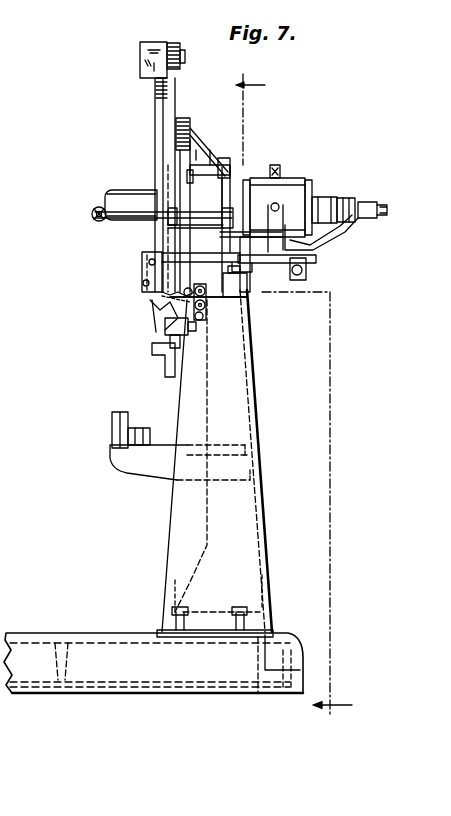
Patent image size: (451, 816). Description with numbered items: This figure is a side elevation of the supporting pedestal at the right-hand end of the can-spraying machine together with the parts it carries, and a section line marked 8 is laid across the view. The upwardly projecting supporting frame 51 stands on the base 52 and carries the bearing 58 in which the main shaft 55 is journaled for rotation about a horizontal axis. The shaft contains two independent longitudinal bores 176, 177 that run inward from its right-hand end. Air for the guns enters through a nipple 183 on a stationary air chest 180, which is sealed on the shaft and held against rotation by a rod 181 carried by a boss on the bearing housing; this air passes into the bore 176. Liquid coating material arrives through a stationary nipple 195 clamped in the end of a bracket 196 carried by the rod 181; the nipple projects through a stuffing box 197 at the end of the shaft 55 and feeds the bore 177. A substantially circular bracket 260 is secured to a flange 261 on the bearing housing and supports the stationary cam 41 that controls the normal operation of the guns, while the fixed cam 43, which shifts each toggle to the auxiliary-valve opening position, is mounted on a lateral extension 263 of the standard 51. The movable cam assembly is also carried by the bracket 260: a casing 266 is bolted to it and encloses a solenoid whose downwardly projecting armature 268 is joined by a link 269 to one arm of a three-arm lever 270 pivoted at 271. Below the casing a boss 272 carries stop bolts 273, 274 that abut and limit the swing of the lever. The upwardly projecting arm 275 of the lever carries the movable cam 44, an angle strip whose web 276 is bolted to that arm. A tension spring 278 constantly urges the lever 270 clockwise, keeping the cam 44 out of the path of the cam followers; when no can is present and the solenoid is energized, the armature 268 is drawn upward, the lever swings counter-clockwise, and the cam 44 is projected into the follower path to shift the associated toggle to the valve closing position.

The section line 8- 8 is at (293, 401).
The stationary cam 41 is at (147, 52).
The fixed cam 43 is at (125, 428).
The movable cam 44 is at (140, 272).
The supporting frame 51 is at (243, 410).
The base 52 is at (85, 641).
The main shaft 55 is at (122, 198).
The bearing 58 is at (222, 174).
The longitudinal bore 176 is at (98, 207).
The longitudinal bore 177 is at (98, 218).
The stationary air chest 180 is at (292, 186).
The rod 181 is at (251, 262).
The nipple 183 is at (277, 166).
The stationary nipple 195 is at (385, 206).
The bracket 196 is at (357, 242).
The stuffing box 197 is at (332, 203).
The circular bracket 260 is at (172, 108).
The flange 261 is at (183, 124).
The lateral extension 263 is at (163, 448).
The casing 266 is at (192, 248).
The armature 268 is at (212, 292).
The link 269 is at (219, 304).
The three-arm lever 270 is at (200, 298).
The pivot 271 is at (150, 312).
The boss 272 is at (166, 330).
The stop bolt 273 is at (172, 350).
The stop bolt 274 is at (197, 340).
The upwardly projecting arm 275 is at (146, 301).
The web 276 is at (158, 267).
The tension spring 278 is at (147, 292).